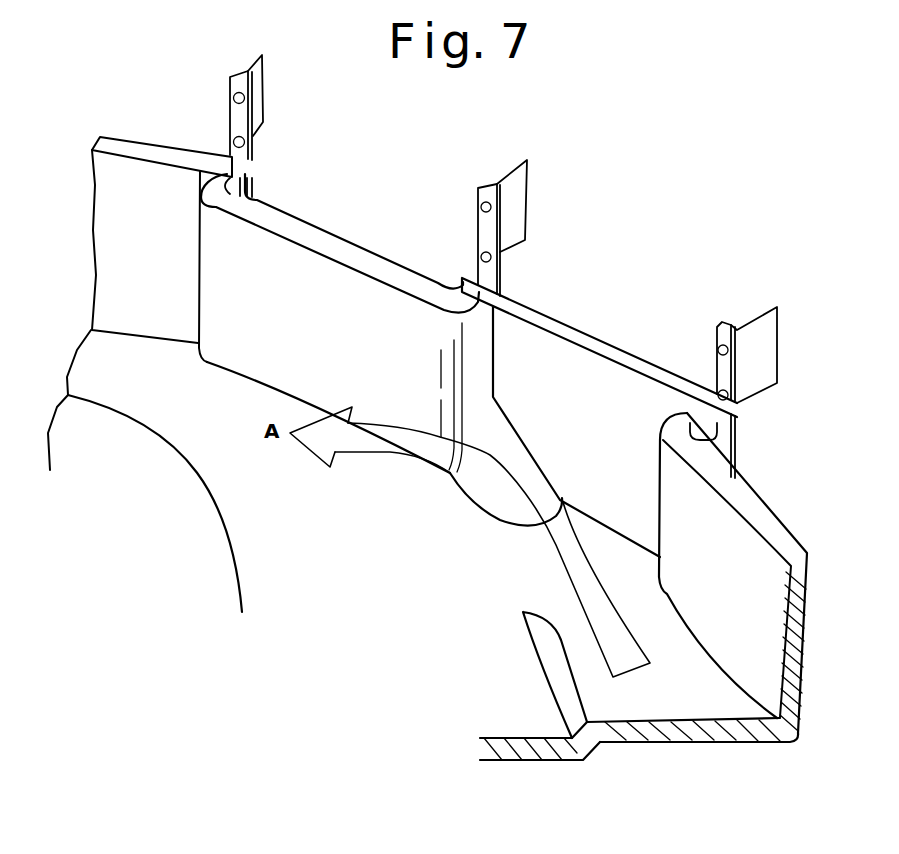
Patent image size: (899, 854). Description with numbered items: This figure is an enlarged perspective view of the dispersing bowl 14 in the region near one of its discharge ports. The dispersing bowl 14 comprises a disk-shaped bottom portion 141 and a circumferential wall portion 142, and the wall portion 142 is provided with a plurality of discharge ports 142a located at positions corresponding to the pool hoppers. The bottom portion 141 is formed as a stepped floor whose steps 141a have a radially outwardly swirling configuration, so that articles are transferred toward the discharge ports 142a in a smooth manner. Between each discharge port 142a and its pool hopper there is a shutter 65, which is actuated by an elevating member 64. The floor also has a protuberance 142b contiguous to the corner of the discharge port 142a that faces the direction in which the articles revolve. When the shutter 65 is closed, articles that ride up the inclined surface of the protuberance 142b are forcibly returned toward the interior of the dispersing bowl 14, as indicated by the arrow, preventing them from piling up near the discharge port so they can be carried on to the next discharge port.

The dispersing bowl 14 is at (342, 243).
The elevating member 64 is at (517, 198).
The shutter 65 is at (652, 380).
The bottom portion 141 is at (718, 715).
The step 141a is at (557, 675).
The circumferential wall portion 142 is at (127, 146).
The discharge port 142a is at (168, 208).
The protuberance 142b is at (517, 463).